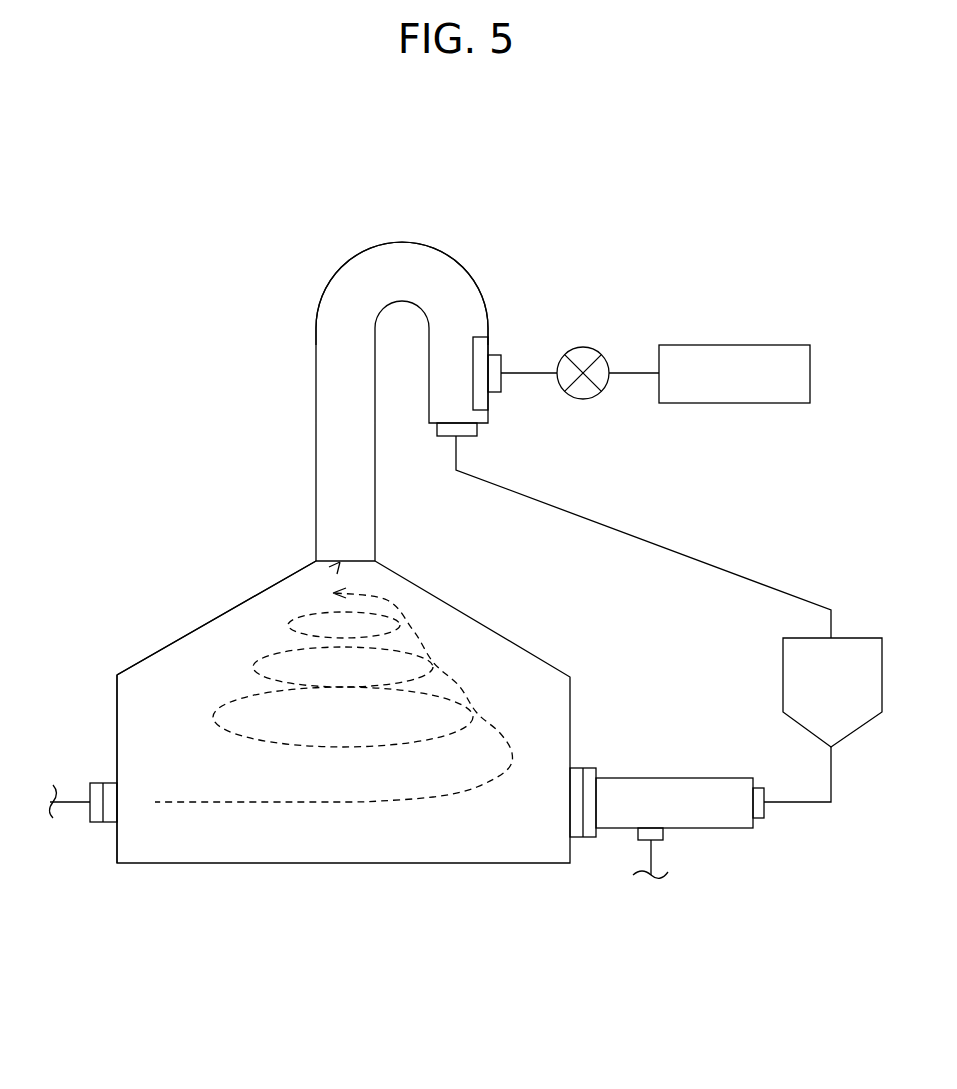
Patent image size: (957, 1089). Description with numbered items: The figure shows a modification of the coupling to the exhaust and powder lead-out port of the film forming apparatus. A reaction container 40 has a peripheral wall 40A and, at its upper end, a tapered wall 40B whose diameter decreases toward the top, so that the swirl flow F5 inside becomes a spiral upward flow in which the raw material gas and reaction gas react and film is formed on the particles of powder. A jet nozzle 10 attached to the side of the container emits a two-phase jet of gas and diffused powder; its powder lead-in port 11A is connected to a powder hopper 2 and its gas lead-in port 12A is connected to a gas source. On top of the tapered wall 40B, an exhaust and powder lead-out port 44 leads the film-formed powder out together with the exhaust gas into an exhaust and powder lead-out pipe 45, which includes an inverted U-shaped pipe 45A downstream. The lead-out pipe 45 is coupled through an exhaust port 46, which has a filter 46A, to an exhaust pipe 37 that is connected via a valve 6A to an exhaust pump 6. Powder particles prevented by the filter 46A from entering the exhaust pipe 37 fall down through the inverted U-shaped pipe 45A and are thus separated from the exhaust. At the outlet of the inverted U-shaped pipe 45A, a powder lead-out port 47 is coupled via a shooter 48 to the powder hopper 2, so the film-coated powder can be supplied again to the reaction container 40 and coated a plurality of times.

The exhaust and powder lead-out pipe 45 is at (314, 484).
The inverted U-shaped pipe 45A is at (402, 242).
The exhaust and powder lead-out port 44 is at (340, 562).
The filter 46A is at (470, 352).
The exhaust port 46 is at (503, 385).
The powder lead-out port 47 is at (447, 437).
The exhaust pipe 37 is at (532, 372).
The valve 6A is at (583, 346).
The exhaust pump 6 is at (734, 345).
The shooter 48 is at (665, 547).
The powder hopper 2 is at (783, 668).
The jet nozzle 10 is at (666, 778).
The powder lead-in port 11A is at (760, 787).
The gas lead-in port 12A is at (665, 834).
The reaction container 40 is at (343, 863).
The peripheral wall 40A is at (118, 728).
The tapered wall 40B is at (198, 628).
The swirl flow F5 is at (453, 793).